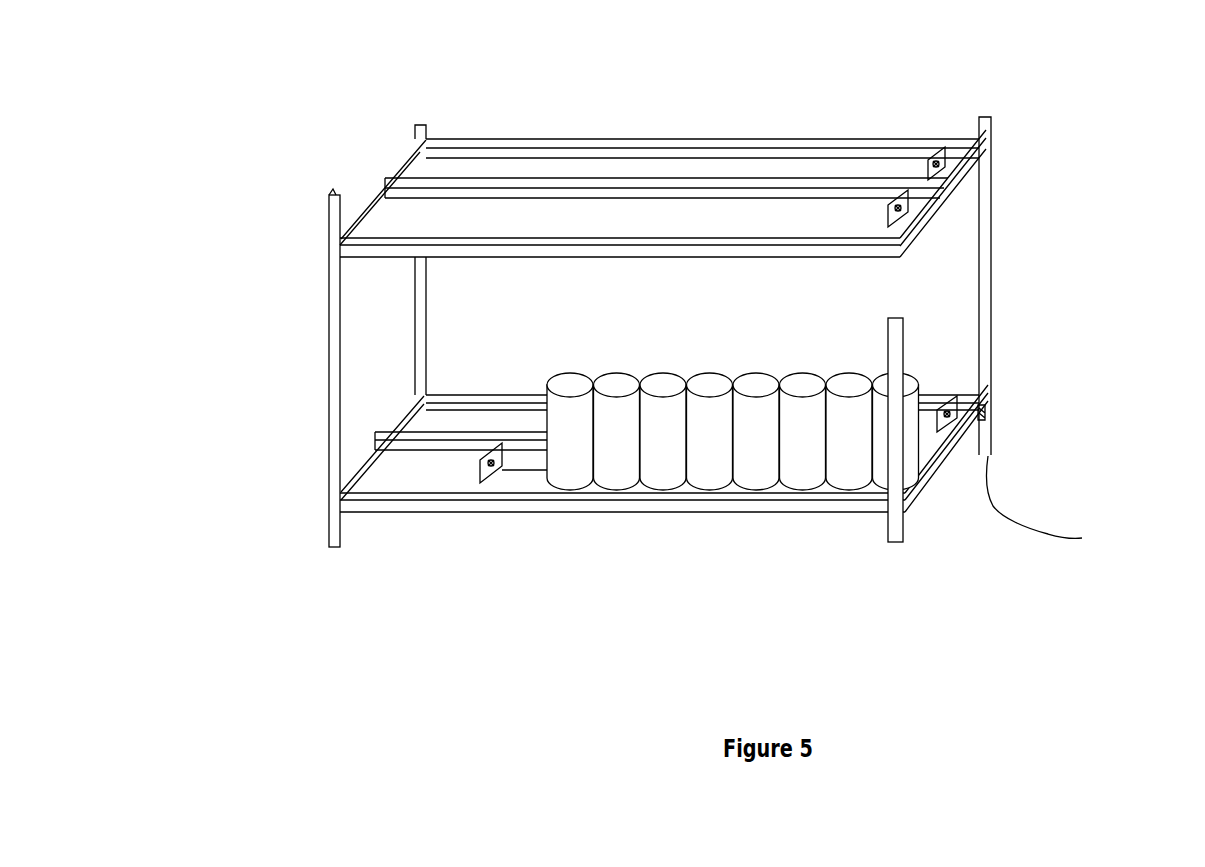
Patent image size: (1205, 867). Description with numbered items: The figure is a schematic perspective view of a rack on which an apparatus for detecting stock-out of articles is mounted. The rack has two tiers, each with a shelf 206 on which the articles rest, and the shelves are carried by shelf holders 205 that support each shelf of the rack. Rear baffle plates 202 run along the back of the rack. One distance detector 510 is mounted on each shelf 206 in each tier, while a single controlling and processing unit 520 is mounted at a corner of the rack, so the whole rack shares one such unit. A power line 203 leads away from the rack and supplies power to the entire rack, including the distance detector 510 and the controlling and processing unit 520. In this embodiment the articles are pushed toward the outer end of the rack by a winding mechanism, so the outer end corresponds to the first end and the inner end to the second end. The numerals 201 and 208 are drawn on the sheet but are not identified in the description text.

The frame 201 is at (927, 467).
The rear baffle plate 202 is at (364, 208).
The power line 203 is at (1037, 527).
The shelf holder 205 is at (334, 372).
The shelf 206 is at (528, 168).
The battery cells 208 is at (624, 478).
The distance detector 510 is at (943, 157).
The controlling and processing unit 520 is at (984, 407).